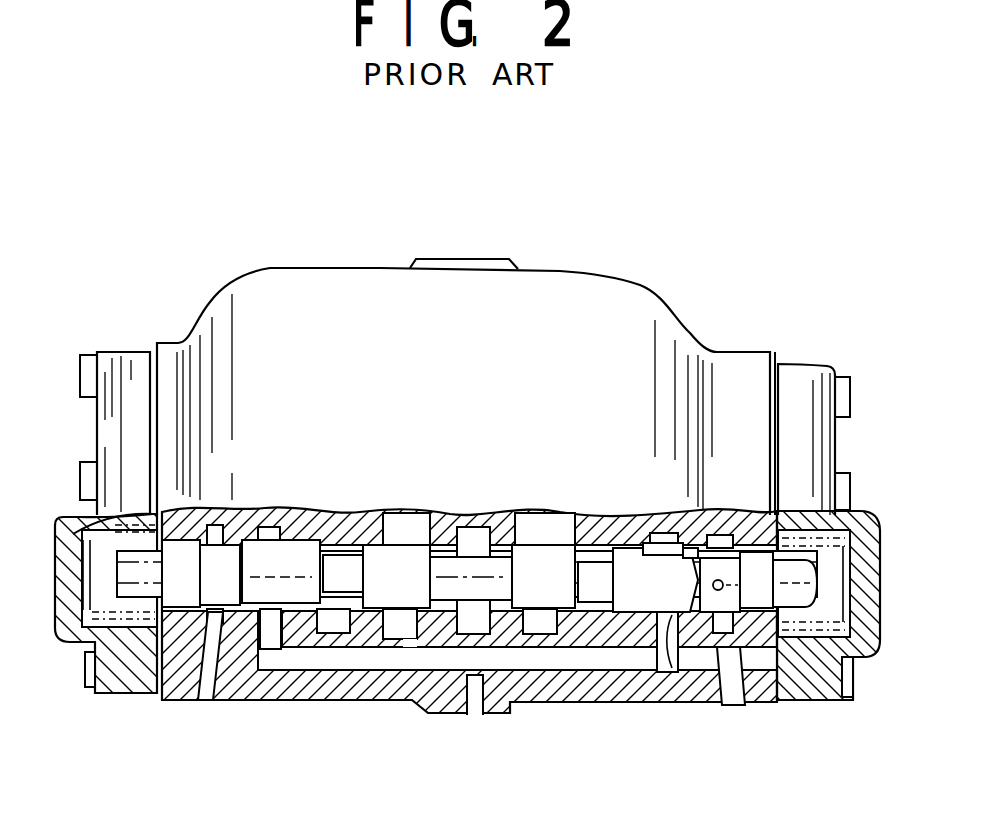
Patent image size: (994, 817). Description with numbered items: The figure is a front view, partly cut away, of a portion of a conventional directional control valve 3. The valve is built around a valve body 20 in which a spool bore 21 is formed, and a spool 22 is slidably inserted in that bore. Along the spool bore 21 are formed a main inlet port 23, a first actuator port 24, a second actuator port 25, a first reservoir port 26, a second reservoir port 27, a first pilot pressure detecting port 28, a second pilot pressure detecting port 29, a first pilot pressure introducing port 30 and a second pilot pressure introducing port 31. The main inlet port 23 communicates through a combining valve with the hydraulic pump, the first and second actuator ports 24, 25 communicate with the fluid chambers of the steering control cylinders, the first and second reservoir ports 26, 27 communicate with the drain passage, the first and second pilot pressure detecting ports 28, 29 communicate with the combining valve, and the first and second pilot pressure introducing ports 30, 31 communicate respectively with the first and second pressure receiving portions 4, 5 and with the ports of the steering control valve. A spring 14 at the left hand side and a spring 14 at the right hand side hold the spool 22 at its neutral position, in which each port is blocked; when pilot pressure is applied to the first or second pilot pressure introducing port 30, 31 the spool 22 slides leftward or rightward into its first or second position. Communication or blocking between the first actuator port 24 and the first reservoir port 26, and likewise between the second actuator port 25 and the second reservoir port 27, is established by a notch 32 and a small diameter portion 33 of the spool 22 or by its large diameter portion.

The directional control valve 3 is at (862, 505).
The first pressure receiving portion 4 is at (98, 543).
The second pressure receiving portion 5 is at (885, 668).
The spring 14 is at (152, 518).
The valve body 20 is at (653, 702).
The spool bore 21 is at (698, 540).
The spool 22 is at (667, 568).
The main inlet port 23 is at (468, 535).
The first actuator port 24 is at (417, 647).
The second actuator port 25 is at (515, 709).
The first reservoir port 26 is at (345, 660).
The second reservoir port 27 is at (626, 702).
The first pilot pressure detecting port 28 is at (237, 700).
The second pilot pressure detecting port 29 is at (667, 640).
The first pilot pressure introducing port 30 is at (177, 700).
The second pilot pressure introducing port 31 is at (757, 705).
The notch 32 is at (388, 517).
The small diameter portion 33 is at (325, 578).